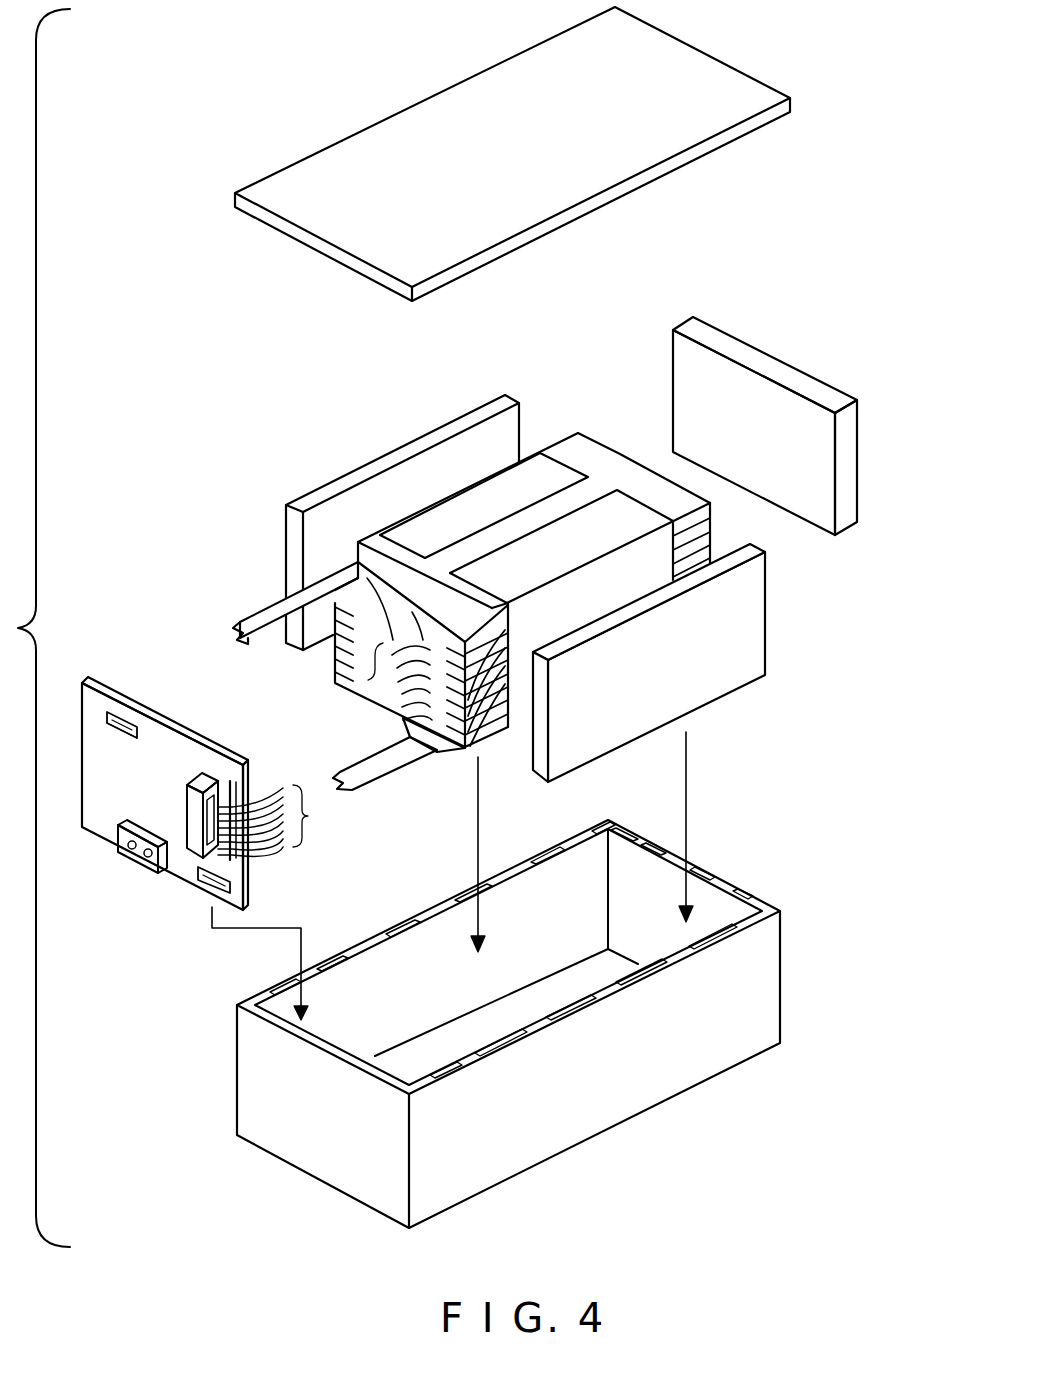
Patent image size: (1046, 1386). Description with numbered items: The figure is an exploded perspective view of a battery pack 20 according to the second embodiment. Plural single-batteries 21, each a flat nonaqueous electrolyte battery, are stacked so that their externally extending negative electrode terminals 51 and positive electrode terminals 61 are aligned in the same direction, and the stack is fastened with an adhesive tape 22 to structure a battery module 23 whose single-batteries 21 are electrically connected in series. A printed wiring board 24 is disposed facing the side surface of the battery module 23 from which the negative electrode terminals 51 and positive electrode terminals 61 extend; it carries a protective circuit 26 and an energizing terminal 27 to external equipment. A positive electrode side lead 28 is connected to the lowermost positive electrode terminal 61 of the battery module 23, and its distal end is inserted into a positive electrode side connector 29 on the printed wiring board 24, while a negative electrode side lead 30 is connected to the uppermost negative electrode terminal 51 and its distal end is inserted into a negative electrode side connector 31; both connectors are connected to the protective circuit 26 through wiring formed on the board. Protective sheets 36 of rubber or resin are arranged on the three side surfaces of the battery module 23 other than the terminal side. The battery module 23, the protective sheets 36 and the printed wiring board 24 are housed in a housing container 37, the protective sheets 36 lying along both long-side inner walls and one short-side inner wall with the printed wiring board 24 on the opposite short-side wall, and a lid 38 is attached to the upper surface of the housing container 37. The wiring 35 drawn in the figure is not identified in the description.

The battery pack 20 is at (146, 320).
The single-battery 21 is at (702, 512).
The adhesive tape 22 is at (607, 522).
The battery module 23 is at (452, 490).
The printed wiring board 24 is at (119, 684).
The protective circuit 26 is at (203, 782).
The energizing terminal 27 is at (147, 870).
The positive electrode side lead 28 is at (385, 770).
The positive electrode side connector 29 is at (232, 887).
The negative electrode side lead 30 is at (243, 622).
The negative electrode side connector 31 is at (125, 722).
The wiring leads 35 is at (368, 680).
The protective sheet 36 is at (364, 477).
The housing container 37 is at (726, 973).
The lid 38 is at (720, 85).
The negative electrode terminal 51 is at (352, 572).
The positive electrode terminal 61 is at (432, 628).